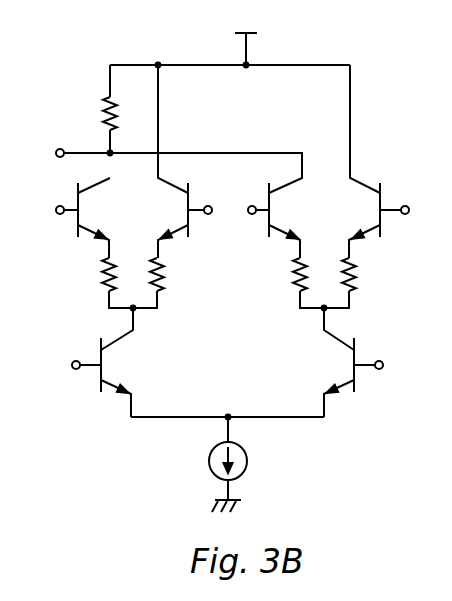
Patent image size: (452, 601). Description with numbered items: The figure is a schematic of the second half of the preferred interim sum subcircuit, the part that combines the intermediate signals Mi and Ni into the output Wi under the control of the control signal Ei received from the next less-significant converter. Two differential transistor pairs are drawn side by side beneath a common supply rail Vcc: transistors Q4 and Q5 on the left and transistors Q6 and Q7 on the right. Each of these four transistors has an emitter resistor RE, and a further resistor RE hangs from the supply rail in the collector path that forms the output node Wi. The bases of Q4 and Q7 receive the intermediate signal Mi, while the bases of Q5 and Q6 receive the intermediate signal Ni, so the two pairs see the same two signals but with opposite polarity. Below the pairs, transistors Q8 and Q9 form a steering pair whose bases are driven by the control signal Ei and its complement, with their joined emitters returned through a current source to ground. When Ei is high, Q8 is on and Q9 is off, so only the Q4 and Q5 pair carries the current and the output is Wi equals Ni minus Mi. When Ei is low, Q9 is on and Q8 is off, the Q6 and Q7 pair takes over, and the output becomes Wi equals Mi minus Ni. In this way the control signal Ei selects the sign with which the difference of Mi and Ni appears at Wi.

The transistor Q4 is at (98, 218).
The transistor Q5 is at (167, 161).
The transistor Q6 is at (291, 215).
The transistor Q7 is at (358, 161).
The transistor Q8 is at (123, 362).
The transistor Q9 is at (330, 362).
The emitter resistor RE is at (229, 187).
The supply voltage Vcc is at (230, 38).
The output Wi is at (162, 157).
The intermediate signal Mi is at (231, 213).
The intermediate signal Ni is at (228, 213).
The control signal Ei is at (408, 352).